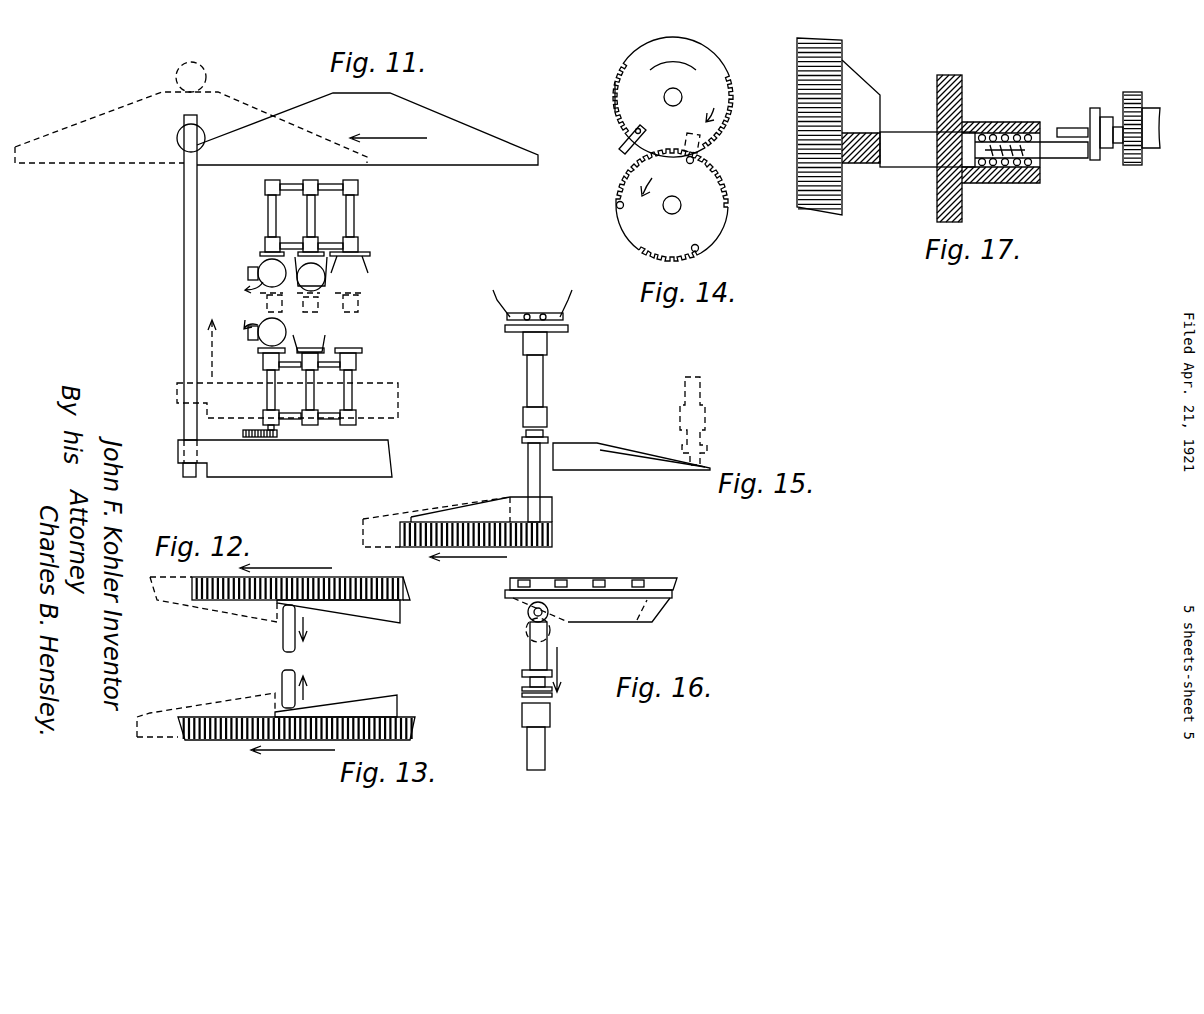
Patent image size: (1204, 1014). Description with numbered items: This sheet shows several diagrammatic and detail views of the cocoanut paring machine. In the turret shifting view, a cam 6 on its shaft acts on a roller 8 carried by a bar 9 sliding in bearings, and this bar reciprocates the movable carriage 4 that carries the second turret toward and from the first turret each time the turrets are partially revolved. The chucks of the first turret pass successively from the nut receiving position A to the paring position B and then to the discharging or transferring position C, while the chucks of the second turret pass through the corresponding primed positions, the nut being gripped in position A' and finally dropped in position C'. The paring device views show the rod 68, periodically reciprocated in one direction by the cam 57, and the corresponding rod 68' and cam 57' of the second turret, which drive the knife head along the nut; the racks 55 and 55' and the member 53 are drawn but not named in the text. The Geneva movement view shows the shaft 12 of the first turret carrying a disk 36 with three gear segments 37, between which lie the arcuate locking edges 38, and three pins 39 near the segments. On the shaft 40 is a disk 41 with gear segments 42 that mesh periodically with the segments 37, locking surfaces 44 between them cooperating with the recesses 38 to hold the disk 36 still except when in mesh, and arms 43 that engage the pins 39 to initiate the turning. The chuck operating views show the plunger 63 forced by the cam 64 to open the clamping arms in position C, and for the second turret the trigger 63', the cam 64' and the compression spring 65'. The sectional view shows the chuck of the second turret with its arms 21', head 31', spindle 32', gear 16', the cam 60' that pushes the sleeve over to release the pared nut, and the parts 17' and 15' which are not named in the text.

In FIG. 11, the movable carriage 4 is at (285, 458).
In FIG. 11, the cam 6 is at (367, 129).
In FIG. 11, the roller 8 is at (177, 142).
In FIG. 11, the bar 9 is at (188, 263).
In FIG. 11, the nut receiving position A is at (360, 226).
In FIG. 11, the paring position B is at (315, 243).
In FIG. 11, the discharging or transferring position C is at (266, 218).
In FIG. 11, the nut receiving position of second turret A' is at (309, 369).
In FIG. 11, the final discharge position C' is at (353, 386).
In FIG. 14, the shaft 12 is at (674, 199).
In FIG. 14, the disk 36 is at (684, 230).
In FIG. 14, the gear segments 37 is at (729, 181).
In FIG. 14, the arcuate locking edges 38 is at (627, 238).
In FIG. 14, the pins 39 is at (617, 208).
In FIG. 14, the shaft 40 is at (674, 90).
In FIG. 14, the disk 41 is at (663, 83).
In FIG. 14, the gear segments 42 is at (612, 98).
In FIG. 14, the arms 43 is at (620, 145).
In FIG. 14, the locking surfaces 44 is at (724, 66).
In FIG. 16, the plate 53 is at (622, 578).
In FIG. 12, the rack 55 is at (316, 588).
In FIG. 13, the rack 55' is at (316, 718).
In FIG. 12, the cam 57 is at (338, 625).
In FIG. 13, the cam 57' is at (336, 695).
In FIG. 16, the plunger 63 is at (524, 696).
In FIG. 15, the trigger 63' is at (513, 482).
In FIG. 17, the trigger 63' is at (984, 159).
In FIG. 16, the cam 64 is at (591, 621).
In FIG. 15, the cam 64' is at (457, 516).
In FIG. 17, the cam 64' is at (858, 126).
In FIG. 17, the compression spring 65' is at (988, 148).
In FIG. 12, the rod 68 is at (272, 628).
In FIG. 13, the rod 68' is at (305, 680).
In FIG. 15, the holder 17' is at (548, 384).
In FIG. 15, the arms 21' is at (549, 305).
In FIG. 15, the cam 60' is at (631, 441).
In FIG. 17, the gear 15' is at (1164, 142).
In FIG. 17, the gear 16' is at (1125, 144).
In FIG. 17, the head 31' is at (1102, 117).
In FIG. 17, the spindle 32' is at (1069, 119).